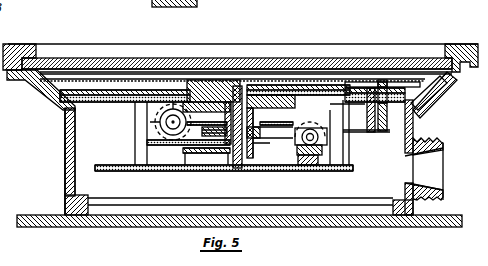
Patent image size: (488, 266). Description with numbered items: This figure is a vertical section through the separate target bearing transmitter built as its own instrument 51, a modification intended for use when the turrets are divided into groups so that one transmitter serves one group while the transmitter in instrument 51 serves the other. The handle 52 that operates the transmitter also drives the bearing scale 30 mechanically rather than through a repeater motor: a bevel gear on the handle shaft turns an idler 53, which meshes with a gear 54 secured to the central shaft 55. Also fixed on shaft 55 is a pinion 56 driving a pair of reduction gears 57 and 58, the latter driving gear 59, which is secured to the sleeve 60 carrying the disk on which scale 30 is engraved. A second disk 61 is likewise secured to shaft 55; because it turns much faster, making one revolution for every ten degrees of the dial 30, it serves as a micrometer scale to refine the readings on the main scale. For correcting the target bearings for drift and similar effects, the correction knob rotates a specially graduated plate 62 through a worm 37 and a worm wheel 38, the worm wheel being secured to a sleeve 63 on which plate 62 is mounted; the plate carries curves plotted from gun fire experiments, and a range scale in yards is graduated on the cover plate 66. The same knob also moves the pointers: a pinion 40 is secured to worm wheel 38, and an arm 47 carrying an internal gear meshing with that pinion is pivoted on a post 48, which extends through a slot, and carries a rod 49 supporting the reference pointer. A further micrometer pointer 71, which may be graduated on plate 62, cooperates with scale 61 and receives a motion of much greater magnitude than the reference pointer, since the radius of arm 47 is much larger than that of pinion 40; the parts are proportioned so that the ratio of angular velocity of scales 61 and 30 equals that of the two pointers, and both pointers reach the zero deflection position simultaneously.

The scale 30 is at (232, 87).
The worm 37 is at (147, 123).
The worm wheel 38 is at (293, 115).
The pinion 40 is at (273, 132).
The arm 47 is at (362, 131).
The post 48 is at (385, 131).
The rod 49 is at (376, 90).
The instrument 51 is at (64, 141).
The handle 52 is at (325, 130).
The idler 53 is at (297, 158).
The gear 54 is at (184, 157).
The central shaft 55 is at (241, 171).
The pinion 56 is at (270, 133).
The reduction gear 57 is at (161, 145).
The reduction gear 58 is at (197, 121).
The gear 59 is at (291, 110).
The sleeve 60 is at (270, 85).
The second disk 61 is at (237, 86).
The graduated plate 62 is at (147, 89).
The sleeve 63 is at (253, 115).
The cover plate 66 is at (91, 81).
The pointer 71 is at (296, 95).